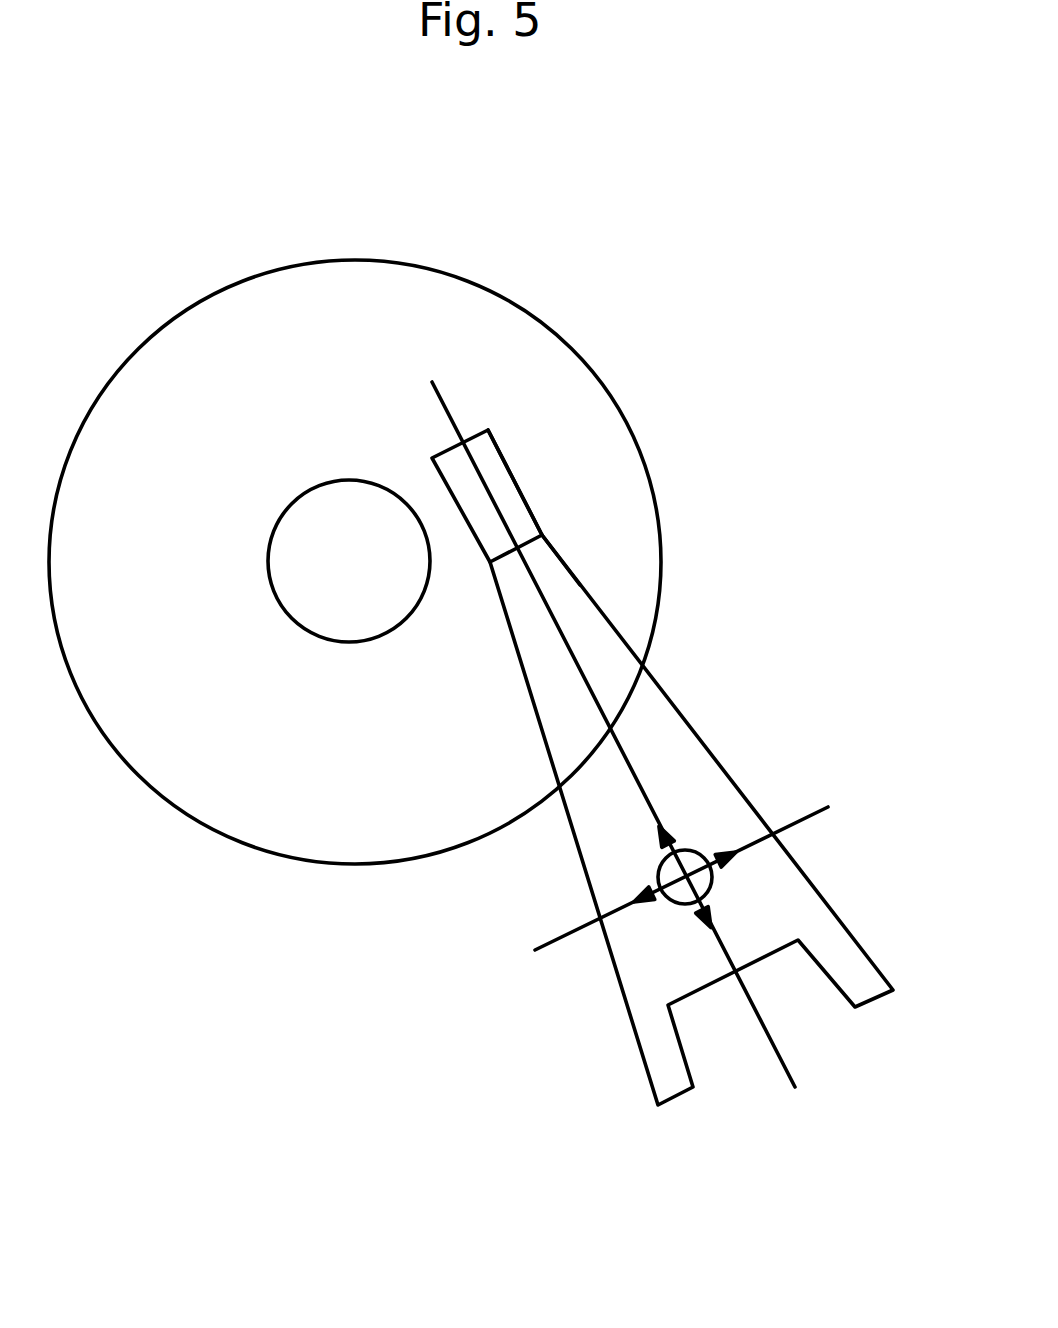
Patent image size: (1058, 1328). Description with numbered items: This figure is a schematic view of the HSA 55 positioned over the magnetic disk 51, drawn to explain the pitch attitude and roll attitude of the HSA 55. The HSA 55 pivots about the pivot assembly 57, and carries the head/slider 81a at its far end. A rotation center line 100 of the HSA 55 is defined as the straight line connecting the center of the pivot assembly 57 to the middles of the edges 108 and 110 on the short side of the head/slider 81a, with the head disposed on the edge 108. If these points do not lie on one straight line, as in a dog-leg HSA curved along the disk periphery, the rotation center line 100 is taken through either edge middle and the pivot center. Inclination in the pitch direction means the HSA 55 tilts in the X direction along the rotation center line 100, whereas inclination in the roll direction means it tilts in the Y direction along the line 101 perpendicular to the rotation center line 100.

The magnetic disk 51 is at (540, 317).
The HSA 55 is at (614, 731).
The pivot assembly 57 is at (693, 851).
The head/slider 81a is at (522, 488).
The rotation center line 100 is at (787, 1067).
The line perpendicular to the rotation center line 101 is at (570, 937).
The edge on the short side 108 is at (437, 452).
The edge on the short side 110 is at (540, 545).